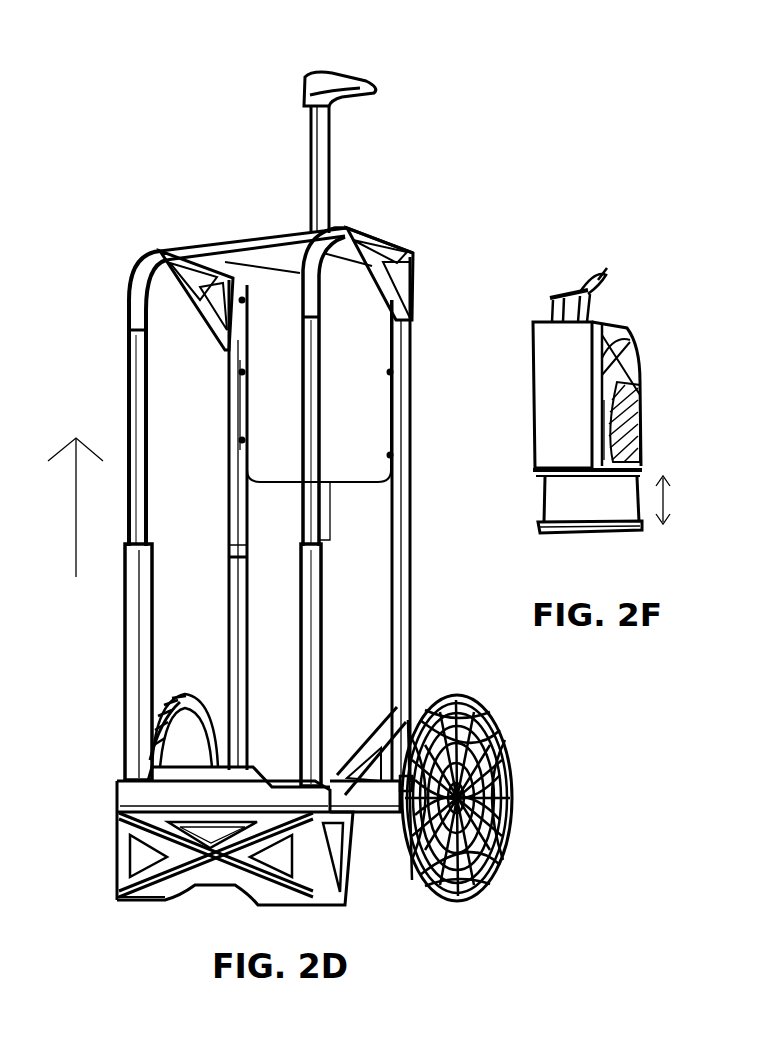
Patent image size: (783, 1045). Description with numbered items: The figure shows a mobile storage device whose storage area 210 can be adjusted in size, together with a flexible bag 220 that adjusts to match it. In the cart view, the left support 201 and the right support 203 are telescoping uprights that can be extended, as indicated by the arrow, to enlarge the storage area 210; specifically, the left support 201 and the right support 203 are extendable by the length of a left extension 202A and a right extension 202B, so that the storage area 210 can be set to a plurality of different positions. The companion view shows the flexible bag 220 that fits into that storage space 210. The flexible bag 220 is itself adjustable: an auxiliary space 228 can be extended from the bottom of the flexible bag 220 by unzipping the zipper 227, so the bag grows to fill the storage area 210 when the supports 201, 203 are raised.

In FIG. 2D, the storage area 210 is at (156, 315).
In FIG. 2D, the left extension 202A is at (128, 428).
In FIG. 2D, the right extension 202B is at (318, 440).
In FIG. 2D, the right support 203 is at (318, 668).
In FIG. 2D, the left support 201 is at (125, 665).
In FIG. 2F, the flexible bag 220 is at (650, 383).
In FIG. 2F, the zipper 227 is at (643, 470).
In FIG. 2F, the auxiliary space 228 is at (637, 530).